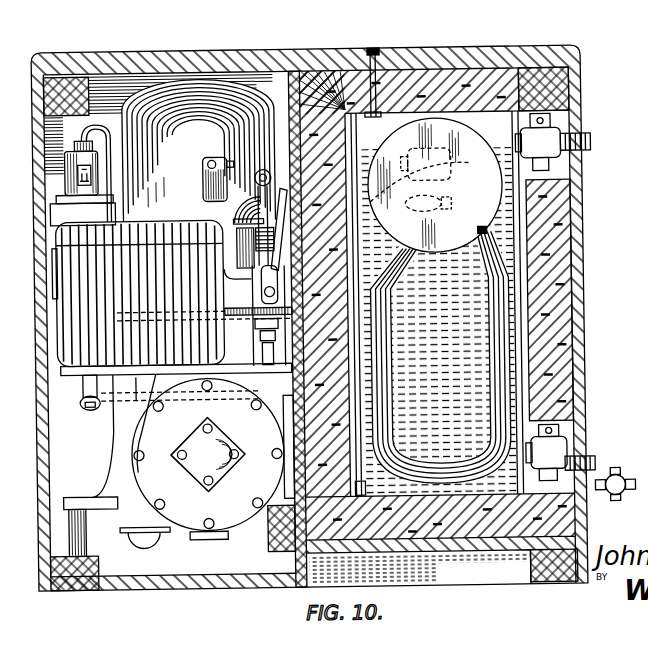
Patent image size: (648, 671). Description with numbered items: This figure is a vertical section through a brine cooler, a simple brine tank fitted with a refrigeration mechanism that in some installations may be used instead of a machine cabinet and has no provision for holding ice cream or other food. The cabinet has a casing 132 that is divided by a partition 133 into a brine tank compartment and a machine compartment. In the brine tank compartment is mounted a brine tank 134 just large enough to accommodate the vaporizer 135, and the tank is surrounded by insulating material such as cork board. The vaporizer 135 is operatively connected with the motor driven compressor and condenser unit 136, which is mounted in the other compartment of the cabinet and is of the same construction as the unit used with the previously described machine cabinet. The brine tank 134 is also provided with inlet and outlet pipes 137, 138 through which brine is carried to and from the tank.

The casing 132 is at (583, 63).
The partition 133 is at (292, 103).
The brine tank 134 is at (583, 228).
The vaporizer 135 is at (443, 254).
The motor driven compressor and condenser unit 136 is at (105, 427).
The inlet pipe 137 is at (593, 146).
The outlet pipe 138 is at (592, 460).